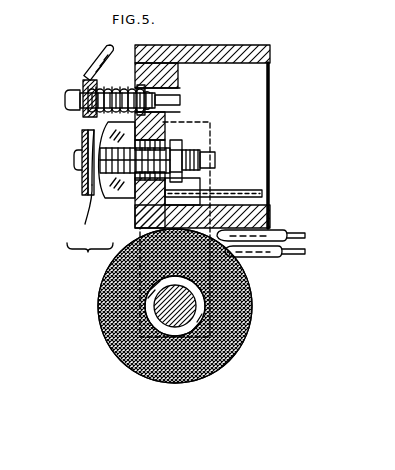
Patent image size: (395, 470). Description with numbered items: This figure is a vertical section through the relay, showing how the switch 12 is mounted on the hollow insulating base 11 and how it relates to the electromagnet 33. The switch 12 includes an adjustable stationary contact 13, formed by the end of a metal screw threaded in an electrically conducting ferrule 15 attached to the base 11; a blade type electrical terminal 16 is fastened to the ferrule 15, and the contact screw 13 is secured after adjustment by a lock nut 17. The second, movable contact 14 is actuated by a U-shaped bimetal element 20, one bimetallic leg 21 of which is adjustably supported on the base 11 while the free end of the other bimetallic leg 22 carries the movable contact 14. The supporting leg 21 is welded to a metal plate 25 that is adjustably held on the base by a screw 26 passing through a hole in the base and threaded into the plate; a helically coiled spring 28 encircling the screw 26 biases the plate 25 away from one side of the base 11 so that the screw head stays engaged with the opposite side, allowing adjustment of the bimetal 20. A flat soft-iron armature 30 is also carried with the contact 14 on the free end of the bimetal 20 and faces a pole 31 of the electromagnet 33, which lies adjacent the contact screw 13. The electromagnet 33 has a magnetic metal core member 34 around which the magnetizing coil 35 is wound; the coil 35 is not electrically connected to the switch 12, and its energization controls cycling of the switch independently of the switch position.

The hollow insulating base 11 is at (247, 45).
The switch 12 is at (90, 273).
The adjustable stationary contact 13 is at (123, 197).
The movable contact 14 is at (83, 187).
The electrically conducting ferrule 15 is at (185, 120).
The blade type electrical terminal 16 is at (245, 190).
The lock nut 17 is at (196, 145).
The U-shaped bimetal element 20 is at (80, 144).
The supporting bimetallic leg 21 is at (82, 92).
The bimetallic leg 22 is at (80, 175).
The metal plate 25 is at (90, 78).
The screw 26 is at (182, 90).
The helically coiled spring 28 is at (118, 86).
The magnetic armature 30 is at (88, 188).
The pole 31 is at (88, 125).
The electromagnet 33 is at (100, 277).
The magnetic metal core member 34 is at (252, 312).
The magnetizing coil 35 is at (216, 372).